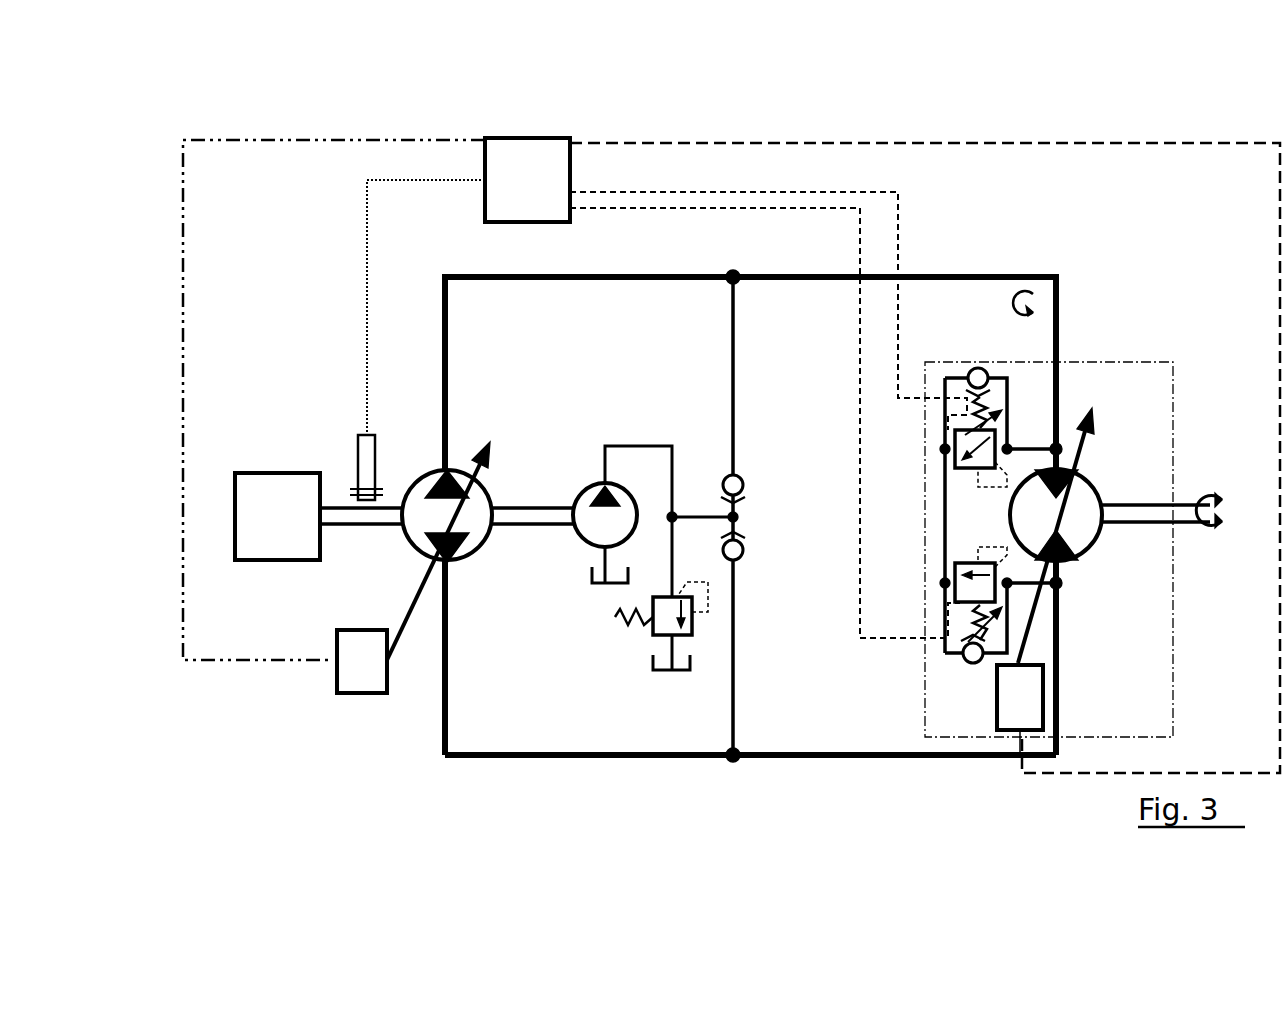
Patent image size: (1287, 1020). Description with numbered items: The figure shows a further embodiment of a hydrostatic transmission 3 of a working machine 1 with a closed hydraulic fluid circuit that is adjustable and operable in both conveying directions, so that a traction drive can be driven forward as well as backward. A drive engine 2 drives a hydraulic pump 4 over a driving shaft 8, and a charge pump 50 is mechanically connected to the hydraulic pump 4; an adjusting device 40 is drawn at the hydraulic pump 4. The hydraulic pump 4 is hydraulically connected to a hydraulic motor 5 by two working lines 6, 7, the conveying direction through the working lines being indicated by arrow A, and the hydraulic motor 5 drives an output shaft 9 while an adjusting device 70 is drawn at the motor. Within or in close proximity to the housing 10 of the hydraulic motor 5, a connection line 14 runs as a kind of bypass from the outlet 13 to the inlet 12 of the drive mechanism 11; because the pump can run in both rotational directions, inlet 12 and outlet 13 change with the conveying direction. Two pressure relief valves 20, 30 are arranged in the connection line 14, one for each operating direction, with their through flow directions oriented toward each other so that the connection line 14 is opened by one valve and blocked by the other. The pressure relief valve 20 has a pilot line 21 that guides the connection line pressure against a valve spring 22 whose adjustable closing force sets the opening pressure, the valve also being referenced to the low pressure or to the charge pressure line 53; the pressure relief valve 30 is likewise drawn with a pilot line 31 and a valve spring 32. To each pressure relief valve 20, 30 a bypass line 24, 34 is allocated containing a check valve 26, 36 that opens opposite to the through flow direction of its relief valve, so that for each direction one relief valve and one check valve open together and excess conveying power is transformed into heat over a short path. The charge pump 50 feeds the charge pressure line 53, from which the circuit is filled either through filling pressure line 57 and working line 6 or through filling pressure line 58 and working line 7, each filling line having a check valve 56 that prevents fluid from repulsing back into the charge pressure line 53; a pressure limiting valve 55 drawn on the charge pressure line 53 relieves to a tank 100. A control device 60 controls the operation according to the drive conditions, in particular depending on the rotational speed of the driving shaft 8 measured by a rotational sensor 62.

The working machine 1 is at (247, 108).
The drive engine 2 is at (277, 523).
The hydrostatic transmission 3 is at (1138, 120).
The hydraulic pump 4 is at (475, 517).
The hydraulic motor 5 is at (1165, 340).
The working line 6 is at (745, 272).
The working line 7 is at (810, 758).
The driving shaft 8 is at (355, 517).
The output shaft 9 is at (1183, 515).
The housing 10 is at (933, 358).
The drive mechanism 11 is at (1080, 523).
The inlet 12 is at (1060, 447).
The outlet 13 is at (1062, 583).
The connection line 14 is at (1018, 445).
The pressure relief valve 20 is at (947, 450).
The pilot line 21 is at (975, 485).
The valve spring 22 is at (975, 432).
The bypass line 24 is at (1005, 410).
The check valve 26 is at (975, 368).
The pressure relief valve 30 is at (972, 585).
The pilot line of second pressure limiting valve 31 is at (975, 553).
The spring of second pressure limiting valve 32 is at (982, 602).
The bypass line 34 is at (965, 608).
The check valve 36 is at (973, 665).
The pump adjusting device 40 is at (357, 665).
The charge pump 50 is at (590, 520).
The charge pressure line 53 is at (645, 445).
The feed pressure limiting valve 55 is at (665, 620).
The check valve 56 is at (745, 495).
The filling pressure line 57 is at (730, 352).
The filling pressure line 58 is at (737, 672).
The control device 60 is at (525, 175).
The rotational sensor 62 is at (365, 457).
The motor adjusting device 70 is at (1022, 717).
The tank 100 is at (677, 660).
The arrow A is at (1030, 298).